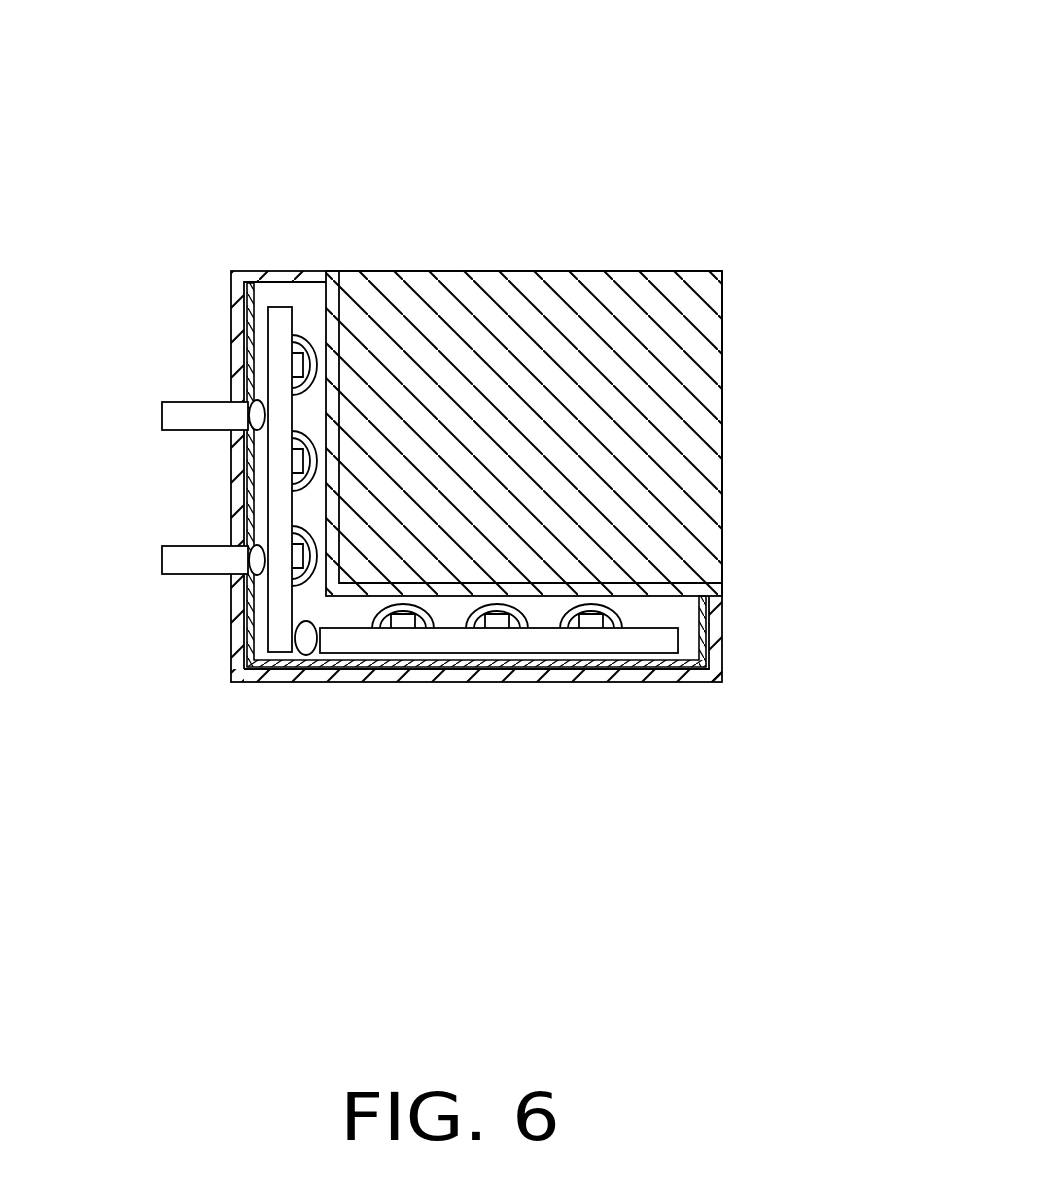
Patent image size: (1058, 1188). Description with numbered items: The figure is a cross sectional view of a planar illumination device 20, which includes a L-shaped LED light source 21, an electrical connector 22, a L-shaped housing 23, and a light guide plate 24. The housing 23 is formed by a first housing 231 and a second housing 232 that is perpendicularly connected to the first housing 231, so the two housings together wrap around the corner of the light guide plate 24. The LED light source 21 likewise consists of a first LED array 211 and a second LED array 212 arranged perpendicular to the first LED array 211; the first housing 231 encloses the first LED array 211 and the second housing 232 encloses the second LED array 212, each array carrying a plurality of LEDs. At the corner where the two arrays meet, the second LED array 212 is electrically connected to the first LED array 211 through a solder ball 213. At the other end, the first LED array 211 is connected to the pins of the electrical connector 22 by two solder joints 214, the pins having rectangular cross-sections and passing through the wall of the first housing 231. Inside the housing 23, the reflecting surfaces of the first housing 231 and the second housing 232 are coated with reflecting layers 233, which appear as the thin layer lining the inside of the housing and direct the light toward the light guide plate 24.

The planar illumination device 20 is at (478, 54).
The L-shaped LED light source 21 is at (473, 382).
The first LED array 211 is at (345, 494).
The second LED array 212 is at (533, 607).
The solder ball 213 is at (303, 636).
The solder joint 214 is at (257, 398).
The electrical connector 22 is at (190, 412).
The L-shaped housing 23 is at (419, 562).
The first housing 231 is at (233, 633).
The second housing 232 is at (312, 672).
The reflecting layers 233 is at (550, 668).
The light guide plate 24 is at (690, 382).